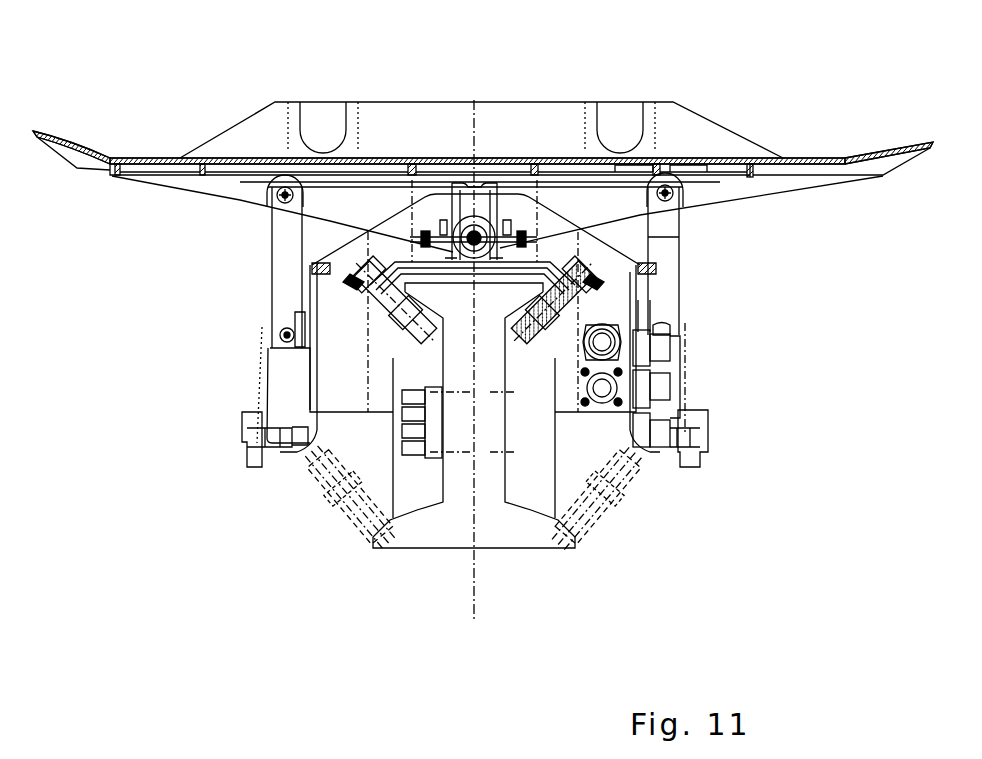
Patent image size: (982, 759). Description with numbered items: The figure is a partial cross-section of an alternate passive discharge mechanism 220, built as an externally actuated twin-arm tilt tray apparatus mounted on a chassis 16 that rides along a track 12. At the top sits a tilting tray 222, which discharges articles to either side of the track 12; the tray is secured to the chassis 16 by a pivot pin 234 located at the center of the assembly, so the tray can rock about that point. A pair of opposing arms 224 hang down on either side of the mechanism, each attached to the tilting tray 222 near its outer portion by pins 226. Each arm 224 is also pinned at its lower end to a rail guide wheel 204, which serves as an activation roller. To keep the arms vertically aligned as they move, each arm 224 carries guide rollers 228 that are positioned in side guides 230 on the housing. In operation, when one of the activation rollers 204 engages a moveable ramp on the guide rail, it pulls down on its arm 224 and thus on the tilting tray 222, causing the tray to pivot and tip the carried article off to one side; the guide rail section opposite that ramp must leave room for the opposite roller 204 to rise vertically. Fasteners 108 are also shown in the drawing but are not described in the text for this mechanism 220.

The passive discharge mechanism 220 is at (201, 61).
The tilting tray 222 is at (822, 160).
The opposing arms 224 is at (682, 280).
The pins 226 is at (670, 189).
The guide rollers 228 is at (655, 323).
The side guides 230 is at (650, 365).
The pivot pin 234 is at (478, 236).
The chassis 16 is at (338, 252).
The track 12 is at (498, 545).
The bolts 108 is at (580, 520).
The rail guide wheel 204 is at (250, 466).